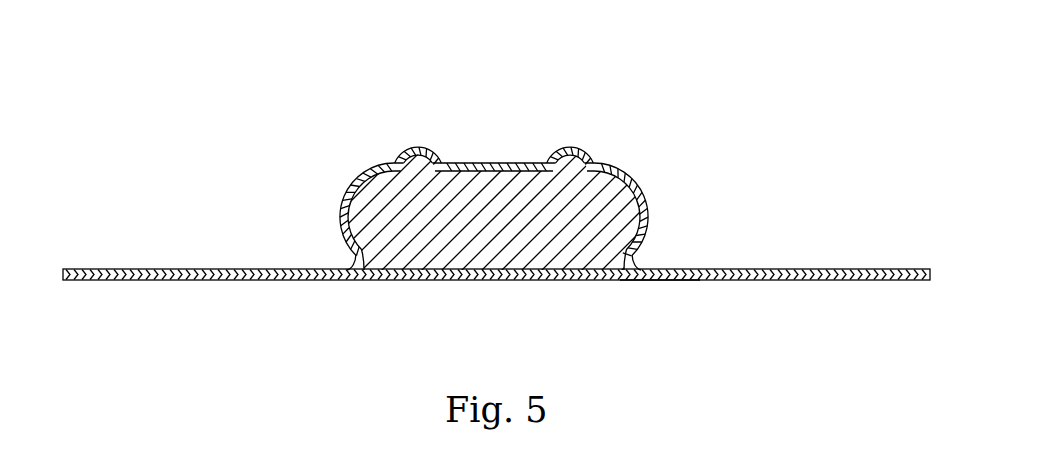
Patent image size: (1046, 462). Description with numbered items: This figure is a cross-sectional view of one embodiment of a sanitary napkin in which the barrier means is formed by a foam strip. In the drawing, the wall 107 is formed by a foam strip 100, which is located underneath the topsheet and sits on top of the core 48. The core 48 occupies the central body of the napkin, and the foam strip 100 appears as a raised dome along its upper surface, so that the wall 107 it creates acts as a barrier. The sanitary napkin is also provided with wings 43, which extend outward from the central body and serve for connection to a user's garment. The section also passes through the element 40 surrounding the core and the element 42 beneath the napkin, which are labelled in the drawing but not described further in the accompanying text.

The outer shell casing 40 is at (638, 187).
The core 48 is at (620, 220).
The wings 43 is at (733, 270).
The bottom attachment layer of plate 42 is at (653, 281).
The foam strip 100 is at (427, 148).
The wall 107 is at (397, 162).